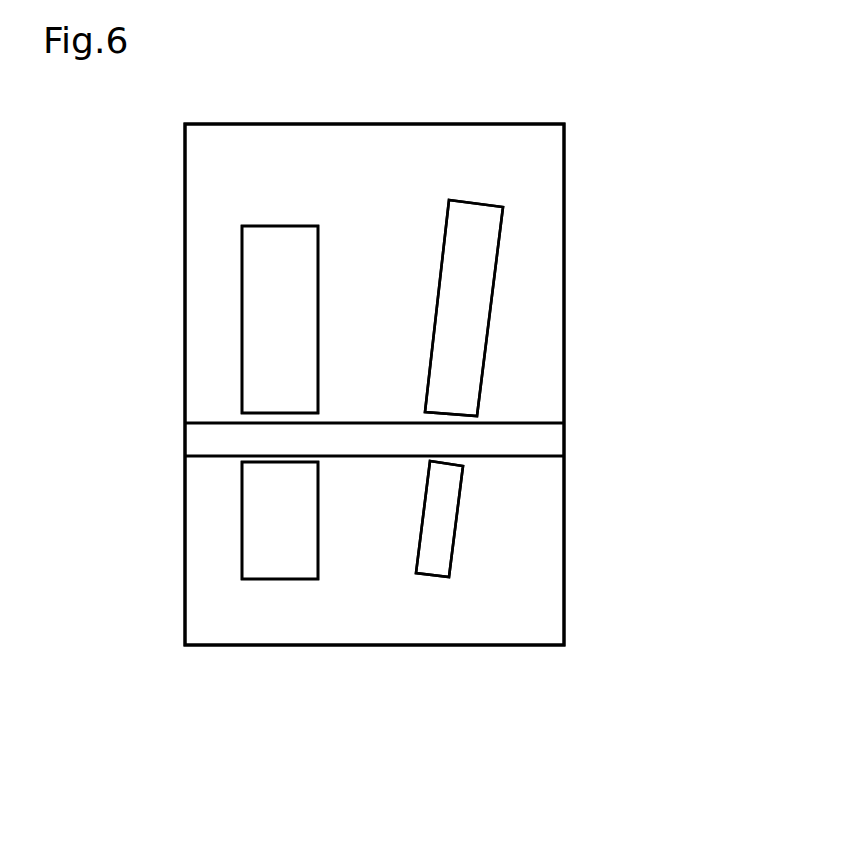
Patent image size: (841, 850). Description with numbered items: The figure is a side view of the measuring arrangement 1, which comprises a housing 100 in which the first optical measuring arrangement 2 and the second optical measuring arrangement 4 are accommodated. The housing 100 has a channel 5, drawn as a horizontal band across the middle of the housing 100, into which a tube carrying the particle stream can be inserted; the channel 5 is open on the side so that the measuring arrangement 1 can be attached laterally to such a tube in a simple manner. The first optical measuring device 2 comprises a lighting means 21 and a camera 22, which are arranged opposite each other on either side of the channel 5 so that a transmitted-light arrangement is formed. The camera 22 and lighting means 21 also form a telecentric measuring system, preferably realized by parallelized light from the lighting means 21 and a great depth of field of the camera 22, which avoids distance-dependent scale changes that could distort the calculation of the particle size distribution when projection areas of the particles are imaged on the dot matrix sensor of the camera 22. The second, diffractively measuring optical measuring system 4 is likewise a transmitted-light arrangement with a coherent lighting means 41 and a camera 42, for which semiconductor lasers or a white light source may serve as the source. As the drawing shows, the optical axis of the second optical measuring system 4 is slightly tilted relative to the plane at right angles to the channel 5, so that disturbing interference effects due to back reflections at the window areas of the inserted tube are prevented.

The measuring arrangement 1 is at (665, 115).
The housing 100 is at (564, 588).
The channel 5 is at (523, 424).
The first optical measuring arrangement 2 is at (294, 624).
The lighting means 21 is at (242, 516).
The camera 22 is at (242, 304).
The second optical measuring arrangement 4 is at (441, 624).
The coherent lighting means 41 is at (460, 517).
The camera 42 is at (497, 270).